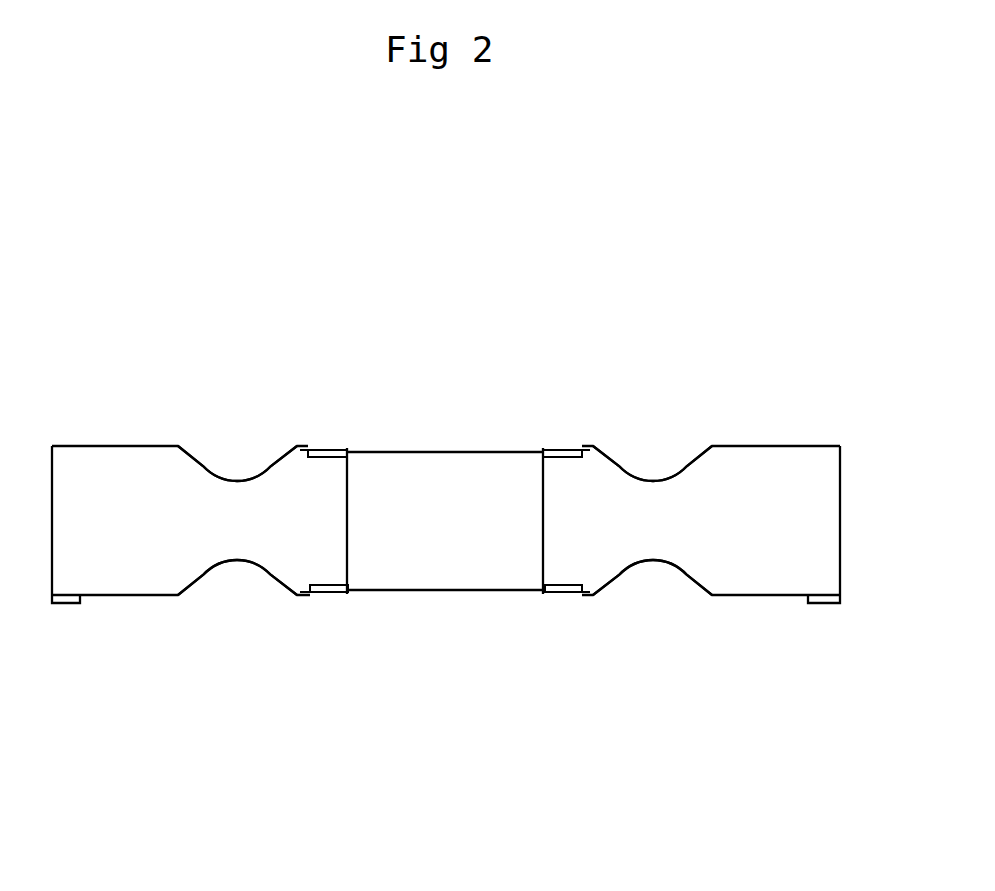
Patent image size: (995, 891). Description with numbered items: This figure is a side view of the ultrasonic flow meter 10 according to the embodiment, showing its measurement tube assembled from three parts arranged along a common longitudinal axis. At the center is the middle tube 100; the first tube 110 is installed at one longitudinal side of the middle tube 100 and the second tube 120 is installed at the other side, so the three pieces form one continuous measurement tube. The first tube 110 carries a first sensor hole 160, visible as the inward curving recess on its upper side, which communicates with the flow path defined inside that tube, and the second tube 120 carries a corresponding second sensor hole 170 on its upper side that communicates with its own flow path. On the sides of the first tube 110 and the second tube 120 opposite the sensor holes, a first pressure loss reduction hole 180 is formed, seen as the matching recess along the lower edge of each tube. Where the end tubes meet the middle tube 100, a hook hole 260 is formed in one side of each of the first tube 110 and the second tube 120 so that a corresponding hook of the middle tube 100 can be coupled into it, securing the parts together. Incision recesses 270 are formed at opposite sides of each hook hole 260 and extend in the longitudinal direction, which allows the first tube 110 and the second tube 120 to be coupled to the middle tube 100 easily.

The battery cell assembly 10 is at (78, 137).
The middle tube 100 is at (425, 422).
The first tube 110 is at (100, 420).
The second tube 120 is at (780, 420).
The first sensor hole 160 is at (242, 482).
The second sensor hole 170 is at (653, 482).
The first pressure loss reduction hole 180 is at (237, 560).
The hook hole 260 is at (320, 452).
The incision recess 270 is at (336, 452).